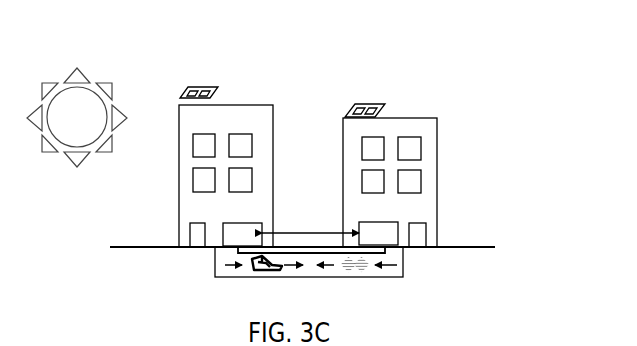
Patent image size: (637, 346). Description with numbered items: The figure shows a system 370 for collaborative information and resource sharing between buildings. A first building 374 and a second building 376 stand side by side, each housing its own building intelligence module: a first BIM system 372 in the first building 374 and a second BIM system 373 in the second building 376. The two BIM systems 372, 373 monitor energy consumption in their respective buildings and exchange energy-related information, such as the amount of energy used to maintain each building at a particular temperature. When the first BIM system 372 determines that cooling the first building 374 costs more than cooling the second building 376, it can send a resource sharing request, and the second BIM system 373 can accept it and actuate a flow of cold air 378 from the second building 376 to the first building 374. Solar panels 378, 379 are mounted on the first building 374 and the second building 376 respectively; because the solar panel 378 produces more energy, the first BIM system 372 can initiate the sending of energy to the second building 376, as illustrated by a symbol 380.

The system for collaborative information and resource sharing between buildings 370 is at (80, 262).
The first BIM system 372 is at (258, 222).
The second BIM system 373 is at (358, 232).
The first building 374 is at (228, 105).
The second building 376 is at (400, 118).
The solar panel 378 is at (198, 87).
The solar panel 379 is at (368, 104).
The symbol 380 is at (258, 274).